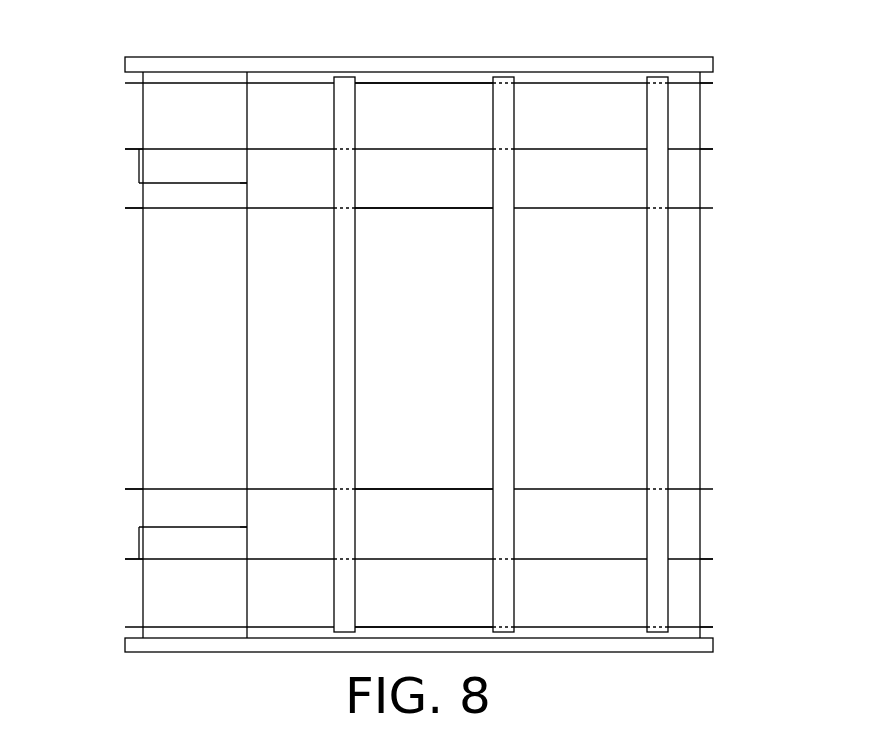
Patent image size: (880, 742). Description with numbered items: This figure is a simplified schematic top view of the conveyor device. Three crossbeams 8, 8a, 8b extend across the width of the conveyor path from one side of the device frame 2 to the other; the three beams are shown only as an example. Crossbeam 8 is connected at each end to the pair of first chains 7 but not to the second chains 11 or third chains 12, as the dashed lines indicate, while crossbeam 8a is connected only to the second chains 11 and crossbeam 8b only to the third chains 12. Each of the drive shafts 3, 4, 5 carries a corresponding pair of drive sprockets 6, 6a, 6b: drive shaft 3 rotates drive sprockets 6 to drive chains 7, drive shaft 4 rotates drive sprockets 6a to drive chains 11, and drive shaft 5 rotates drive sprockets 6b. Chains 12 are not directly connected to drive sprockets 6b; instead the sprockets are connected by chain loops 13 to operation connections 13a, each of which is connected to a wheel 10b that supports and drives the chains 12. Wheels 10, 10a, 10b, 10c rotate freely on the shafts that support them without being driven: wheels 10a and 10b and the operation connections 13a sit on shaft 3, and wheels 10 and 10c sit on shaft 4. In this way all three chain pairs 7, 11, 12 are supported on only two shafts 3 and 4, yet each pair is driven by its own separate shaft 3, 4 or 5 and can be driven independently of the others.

The device frame 2 is at (177, 58).
The drive shaft 3 is at (143, 350).
The drive shaft 4 is at (702, 372).
The drive shaft 5 is at (247, 345).
The drive sprockets 6 is at (132, 83).
The drive sprockets 6a is at (710, 212).
The drive sprockets 6b is at (250, 184).
The first chains 7 is at (562, 83).
The crossbeam 8 is at (345, 295).
The crossbeam 8a is at (505, 317).
The crossbeam 8b is at (657, 283).
The wheel 10 is at (707, 83).
The wheel 10a is at (137, 210).
The wheel 10b is at (132, 147).
The wheel 10c is at (707, 148).
The second chains 11 is at (435, 208).
The third chains 12 is at (405, 148).
The chain loops 13 is at (185, 182).
The operation connections 13a is at (137, 168).